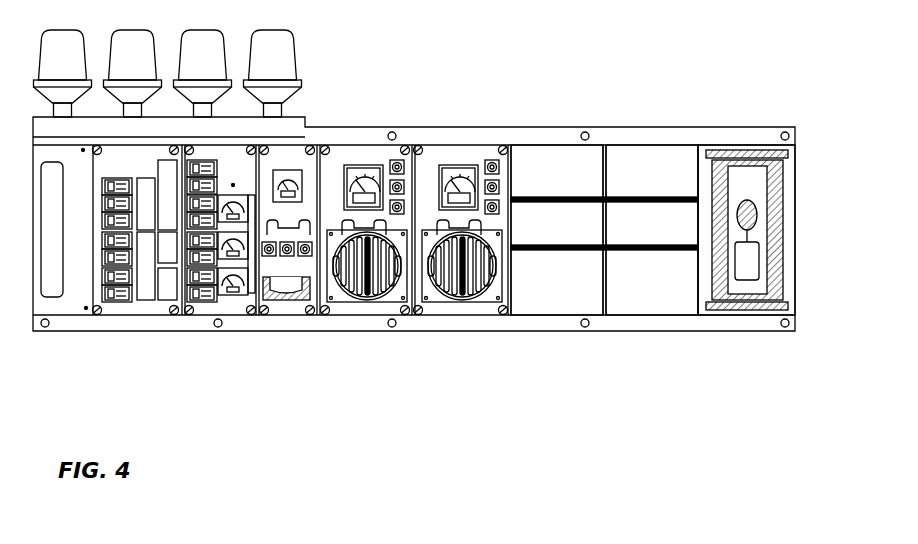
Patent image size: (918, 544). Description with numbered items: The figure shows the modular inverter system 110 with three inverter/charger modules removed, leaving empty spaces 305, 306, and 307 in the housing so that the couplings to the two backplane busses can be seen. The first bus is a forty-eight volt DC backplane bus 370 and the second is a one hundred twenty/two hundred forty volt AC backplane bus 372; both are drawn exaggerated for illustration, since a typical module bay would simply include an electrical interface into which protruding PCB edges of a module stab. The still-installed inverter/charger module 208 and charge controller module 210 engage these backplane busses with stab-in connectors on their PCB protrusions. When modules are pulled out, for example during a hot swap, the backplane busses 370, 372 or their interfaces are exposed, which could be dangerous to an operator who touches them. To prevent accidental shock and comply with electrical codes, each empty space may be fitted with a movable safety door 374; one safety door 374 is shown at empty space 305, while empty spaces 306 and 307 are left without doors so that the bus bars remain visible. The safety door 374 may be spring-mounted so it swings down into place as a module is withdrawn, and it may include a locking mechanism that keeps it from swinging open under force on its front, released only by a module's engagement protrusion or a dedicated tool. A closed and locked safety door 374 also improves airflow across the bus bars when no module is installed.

The modular inverter system 110 is at (288, 440).
The inverter/charger module 208 is at (461, 318).
The charge controller module 210 is at (373, 318).
The empty space 305 is at (743, 318).
The empty space 306 is at (660, 318).
The empty space 307 is at (560, 318).
The 48 VDC backplane bus 370 is at (552, 192).
The 120/240 VAC backplane bus 372 is at (648, 240).
The movable safety door 374 is at (748, 165).